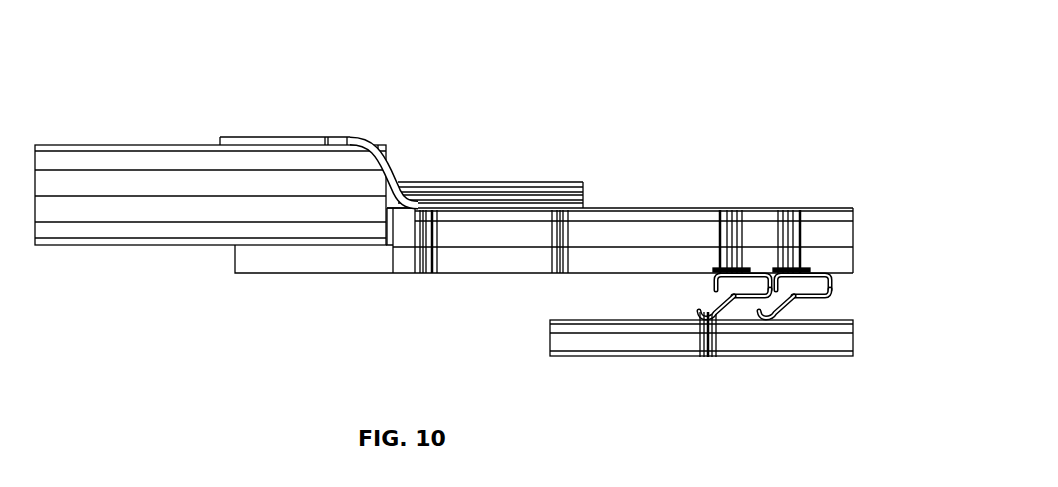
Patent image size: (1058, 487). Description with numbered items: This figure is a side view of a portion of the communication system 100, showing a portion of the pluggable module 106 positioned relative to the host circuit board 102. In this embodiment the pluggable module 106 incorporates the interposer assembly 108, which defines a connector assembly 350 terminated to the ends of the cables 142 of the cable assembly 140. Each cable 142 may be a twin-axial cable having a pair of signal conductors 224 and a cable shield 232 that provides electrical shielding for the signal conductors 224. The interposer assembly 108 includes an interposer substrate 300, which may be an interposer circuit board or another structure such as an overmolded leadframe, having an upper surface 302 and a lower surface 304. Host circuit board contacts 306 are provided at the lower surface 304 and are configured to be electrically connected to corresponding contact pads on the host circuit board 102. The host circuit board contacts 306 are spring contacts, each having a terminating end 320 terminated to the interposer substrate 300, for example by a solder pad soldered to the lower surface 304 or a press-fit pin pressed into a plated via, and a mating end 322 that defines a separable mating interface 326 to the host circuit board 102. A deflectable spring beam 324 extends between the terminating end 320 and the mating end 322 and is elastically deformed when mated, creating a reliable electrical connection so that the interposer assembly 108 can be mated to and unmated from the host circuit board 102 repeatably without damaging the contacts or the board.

The communication system 100 is at (587, 50).
The pluggable module 106 is at (152, 128).
The cable shield 232 is at (285, 160).
The connector assembly 350 is at (430, 118).
The signal conductors 224 is at (490, 181).
The upper surface 302 is at (840, 207).
The interposer substrate 300 is at (813, 230).
The interposer assembly 108 is at (865, 222).
The cable assembly 140 is at (73, 250).
The cable 142 is at (133, 228).
The lower surface 304 is at (833, 280).
The host circuit board contacts 306 is at (826, 297).
The host circuit board 102 is at (840, 343).
The terminating end 320 is at (712, 276).
The separable mating interface 326 is at (735, 299).
The mating end 322 is at (708, 330).
The deflectable spring beam 324 is at (779, 299).